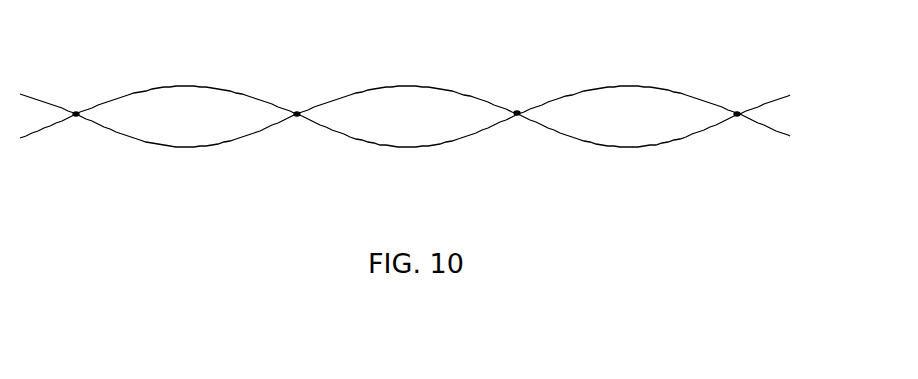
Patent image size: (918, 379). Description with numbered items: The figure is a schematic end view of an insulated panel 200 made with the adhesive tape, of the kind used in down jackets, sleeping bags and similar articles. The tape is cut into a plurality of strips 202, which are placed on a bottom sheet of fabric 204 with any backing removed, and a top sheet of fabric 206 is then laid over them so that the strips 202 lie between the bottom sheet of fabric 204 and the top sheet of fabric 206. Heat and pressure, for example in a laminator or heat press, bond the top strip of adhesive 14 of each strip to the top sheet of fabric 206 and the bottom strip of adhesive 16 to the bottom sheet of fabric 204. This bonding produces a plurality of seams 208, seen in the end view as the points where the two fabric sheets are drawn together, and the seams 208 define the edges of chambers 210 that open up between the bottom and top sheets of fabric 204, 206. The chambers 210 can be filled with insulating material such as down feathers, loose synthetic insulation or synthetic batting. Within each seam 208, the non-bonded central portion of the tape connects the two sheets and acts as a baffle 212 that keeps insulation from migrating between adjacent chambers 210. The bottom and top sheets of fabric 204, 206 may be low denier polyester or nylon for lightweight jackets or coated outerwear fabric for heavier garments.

The insulated panel 200 is at (405, 110).
The strips 202 is at (97, 117).
The bottom sheet of fabric 204 is at (427, 146).
The top sheet of fabric 206 is at (417, 85).
The seams 208 is at (75, 96).
The chambers 210 is at (179, 128).
The baffle 212 is at (293, 113).
The top strip of adhesive 14 is at (496, 114).
The bottom strip of adhesive 16 is at (537, 119).